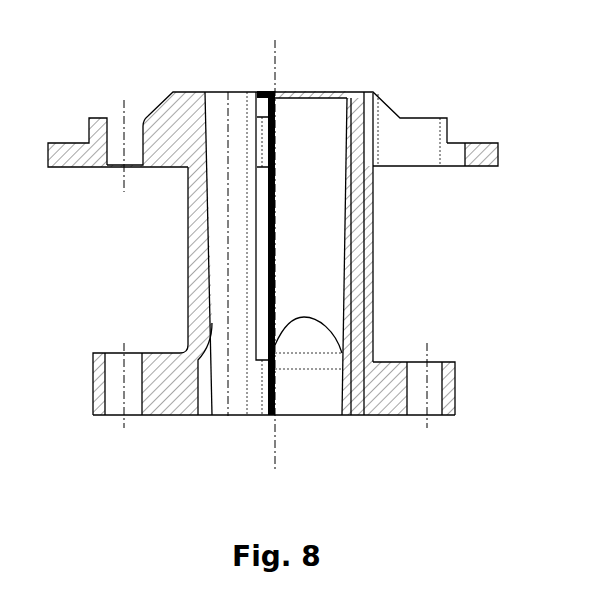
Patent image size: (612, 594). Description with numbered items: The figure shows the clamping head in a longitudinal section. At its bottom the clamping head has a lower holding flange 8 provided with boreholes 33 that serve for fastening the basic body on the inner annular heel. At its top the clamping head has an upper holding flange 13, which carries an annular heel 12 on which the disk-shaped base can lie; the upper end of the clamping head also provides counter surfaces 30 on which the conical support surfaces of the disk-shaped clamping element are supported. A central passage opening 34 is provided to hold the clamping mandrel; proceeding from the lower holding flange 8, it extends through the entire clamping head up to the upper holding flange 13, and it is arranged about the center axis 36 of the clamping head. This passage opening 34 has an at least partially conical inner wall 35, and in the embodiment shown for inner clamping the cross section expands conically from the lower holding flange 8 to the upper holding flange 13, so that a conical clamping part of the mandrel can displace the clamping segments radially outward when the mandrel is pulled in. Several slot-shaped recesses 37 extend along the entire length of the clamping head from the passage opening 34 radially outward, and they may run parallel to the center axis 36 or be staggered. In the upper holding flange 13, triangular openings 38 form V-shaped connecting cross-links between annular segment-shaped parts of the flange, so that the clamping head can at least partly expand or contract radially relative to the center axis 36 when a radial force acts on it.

The lower holding flange 8 is at (397, 397).
The annular heel 12 is at (78, 141).
The upper holding flange 13 is at (558, 193).
The counter surfaces 30 is at (165, 90).
The boreholes 33 is at (117, 388).
The central passage opening 34 is at (322, 162).
The conical inner wall 35 is at (343, 213).
The center axis 36 is at (273, 82).
The recesses 37 is at (343, 300).
The triangular openings 38 is at (418, 133).